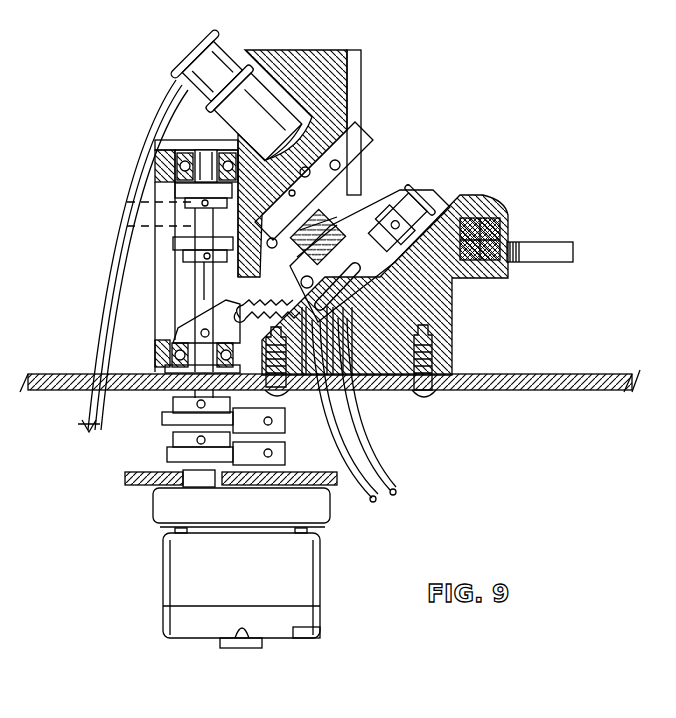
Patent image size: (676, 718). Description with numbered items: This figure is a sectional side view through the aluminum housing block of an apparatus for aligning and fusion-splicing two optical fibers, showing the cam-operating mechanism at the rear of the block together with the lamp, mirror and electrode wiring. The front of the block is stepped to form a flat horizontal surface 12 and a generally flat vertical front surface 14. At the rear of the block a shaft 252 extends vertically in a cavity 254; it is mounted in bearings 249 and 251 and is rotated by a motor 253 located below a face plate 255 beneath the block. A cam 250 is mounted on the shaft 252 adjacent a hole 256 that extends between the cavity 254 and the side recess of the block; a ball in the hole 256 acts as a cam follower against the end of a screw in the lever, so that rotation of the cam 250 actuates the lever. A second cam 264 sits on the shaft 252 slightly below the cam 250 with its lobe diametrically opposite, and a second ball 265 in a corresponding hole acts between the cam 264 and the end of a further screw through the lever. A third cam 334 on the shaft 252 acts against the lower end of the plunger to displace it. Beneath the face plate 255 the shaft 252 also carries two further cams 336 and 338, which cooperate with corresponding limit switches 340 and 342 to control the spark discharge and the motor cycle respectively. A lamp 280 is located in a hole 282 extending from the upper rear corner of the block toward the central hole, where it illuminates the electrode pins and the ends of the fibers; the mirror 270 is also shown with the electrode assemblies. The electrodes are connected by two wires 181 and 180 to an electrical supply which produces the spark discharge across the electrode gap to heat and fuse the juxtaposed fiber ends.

The flat horizontal surface 12 is at (467, 195).
The vertical front surface 14 is at (362, 74).
The wire 180 is at (372, 503).
The wire 181 is at (398, 492).
The bearing 249 is at (168, 162).
The cam 250 is at (187, 217).
The bearing 251 is at (150, 362).
The shaft 252 is at (203, 283).
The motor 253 is at (183, 585).
The cavity 254 is at (165, 303).
The face plate 255 is at (557, 388).
The hole 256 is at (170, 200).
The second cam 264 is at (180, 243).
The second ball 265 is at (127, 228).
The mirror 270 is at (360, 193).
The lamp 280 is at (207, 50).
The hole 282 is at (338, 52).
The third cam 334 is at (187, 333).
The cam 336 is at (167, 455).
The cam 338 is at (167, 420).
The limit switch 340 is at (283, 452).
The limit switch 342 is at (278, 422).